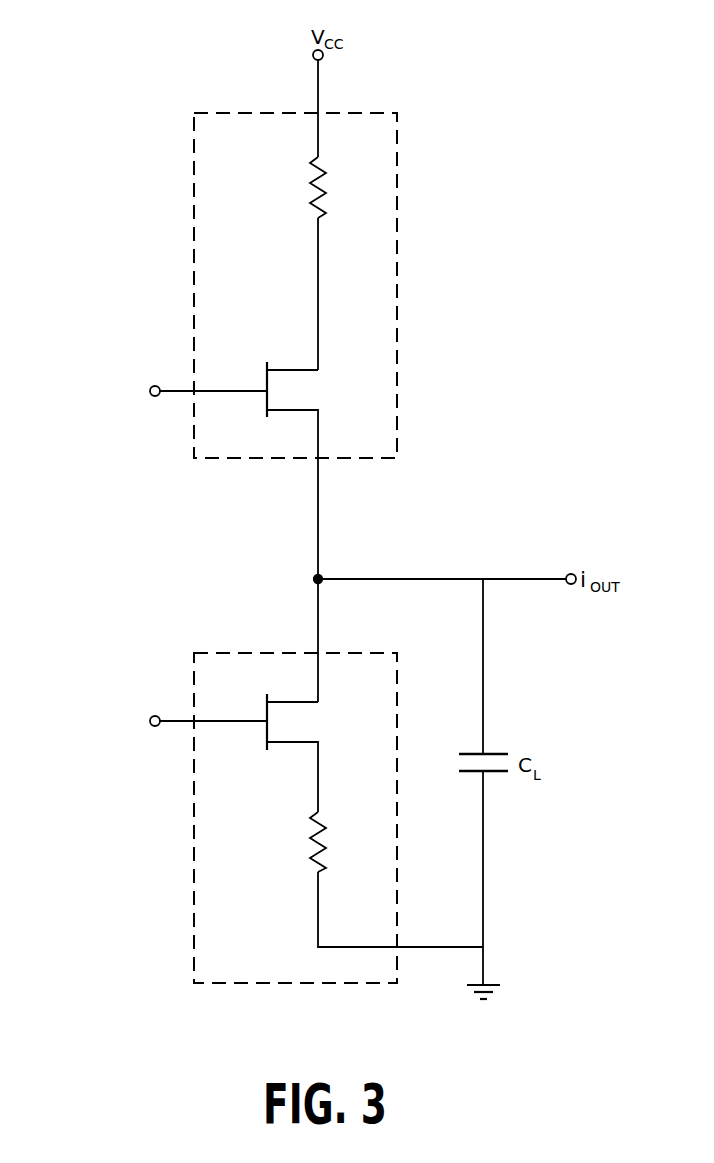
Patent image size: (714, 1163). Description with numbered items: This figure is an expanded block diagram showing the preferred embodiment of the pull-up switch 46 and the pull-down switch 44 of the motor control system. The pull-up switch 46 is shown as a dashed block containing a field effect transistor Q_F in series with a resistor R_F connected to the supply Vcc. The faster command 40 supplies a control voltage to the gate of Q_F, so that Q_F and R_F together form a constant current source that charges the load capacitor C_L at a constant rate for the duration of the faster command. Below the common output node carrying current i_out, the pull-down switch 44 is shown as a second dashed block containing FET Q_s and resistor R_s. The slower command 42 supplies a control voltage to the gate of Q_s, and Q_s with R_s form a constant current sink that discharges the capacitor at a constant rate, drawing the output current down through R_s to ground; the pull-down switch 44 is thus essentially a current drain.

The faster command 40 is at (157, 397).
The slower command 42 is at (155, 733).
The pull-down switch 44 is at (240, 975).
The pull-up switch 46 is at (384, 455).